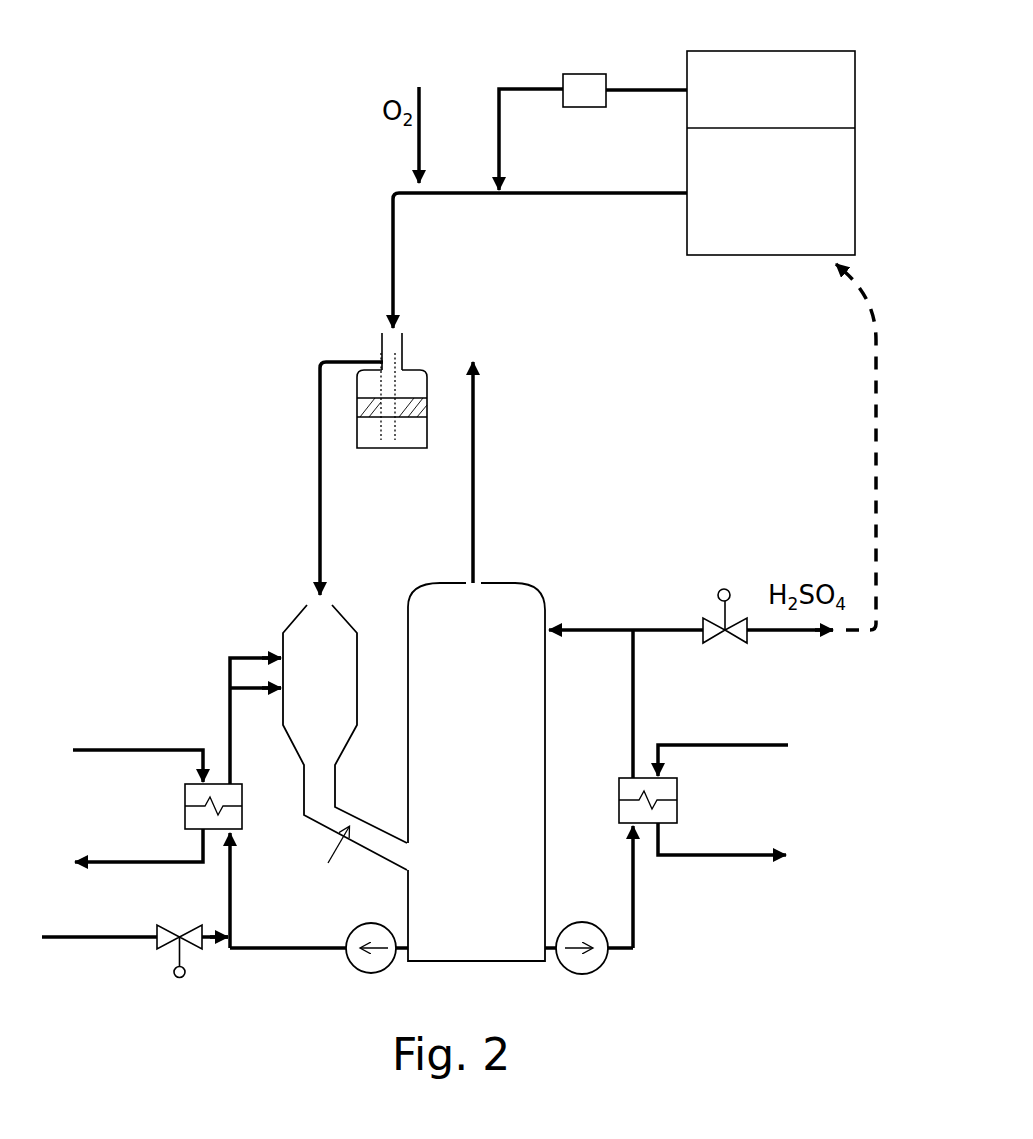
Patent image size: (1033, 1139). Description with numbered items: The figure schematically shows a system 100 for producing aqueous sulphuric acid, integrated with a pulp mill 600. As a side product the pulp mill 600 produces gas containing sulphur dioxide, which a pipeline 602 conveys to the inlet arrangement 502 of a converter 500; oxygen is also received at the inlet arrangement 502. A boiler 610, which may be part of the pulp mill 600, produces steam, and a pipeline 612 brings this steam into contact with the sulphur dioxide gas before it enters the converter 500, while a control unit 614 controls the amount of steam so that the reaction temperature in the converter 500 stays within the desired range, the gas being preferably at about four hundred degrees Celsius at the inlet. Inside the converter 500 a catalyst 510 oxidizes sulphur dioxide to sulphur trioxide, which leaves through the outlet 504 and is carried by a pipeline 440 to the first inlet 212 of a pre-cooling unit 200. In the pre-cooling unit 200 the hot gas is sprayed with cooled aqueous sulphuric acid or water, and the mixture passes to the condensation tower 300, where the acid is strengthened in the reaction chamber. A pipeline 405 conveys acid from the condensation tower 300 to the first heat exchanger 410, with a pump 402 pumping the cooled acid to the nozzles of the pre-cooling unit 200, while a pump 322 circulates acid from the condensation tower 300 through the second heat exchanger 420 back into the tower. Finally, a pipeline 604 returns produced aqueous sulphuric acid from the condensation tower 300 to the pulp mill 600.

The system 100 is at (658, 1021).
The pre-cooling unit 200 is at (293, 617).
The first inlet 212 is at (310, 583).
The condensation tower 300 is at (520, 588).
The pump 322 is at (605, 965).
The pump 402 is at (346, 956).
The pipeline 405 is at (252, 952).
The first heat exchanger 410 is at (183, 818).
The second heat exchanger 420 is at (677, 815).
The pipeline 440 is at (318, 408).
The converter 500 is at (375, 450).
The inlet arrangement 502 is at (377, 325).
The outlet 504 is at (375, 355).
The catalyst 510 is at (367, 407).
The pulp mill 600 is at (771, 153).
The pipeline 602 is at (580, 196).
The pipeline 604 is at (876, 428).
The boiler 610 is at (771, 96).
The pipeline 612 is at (527, 88).
The control unit 614 is at (571, 73).